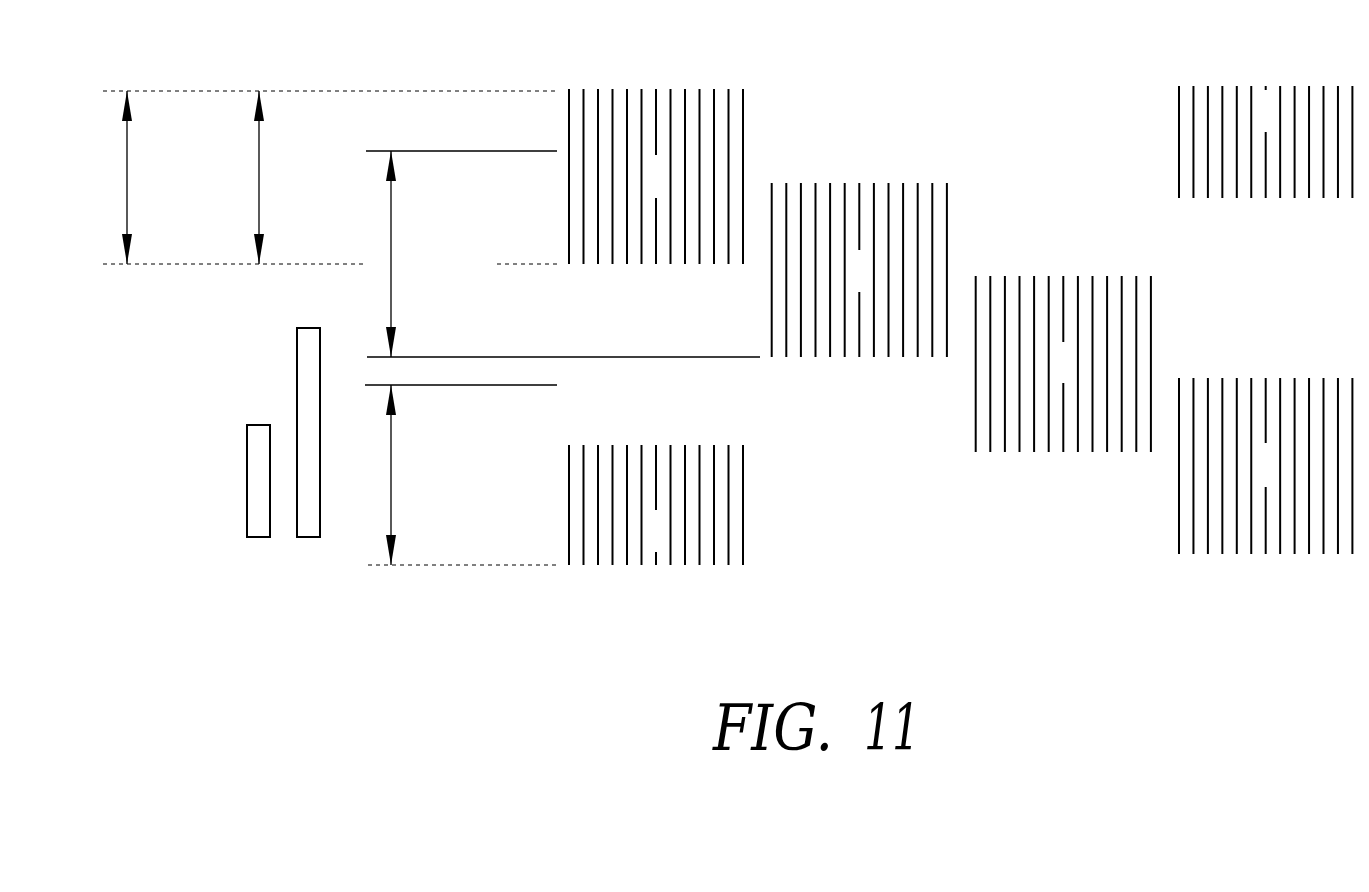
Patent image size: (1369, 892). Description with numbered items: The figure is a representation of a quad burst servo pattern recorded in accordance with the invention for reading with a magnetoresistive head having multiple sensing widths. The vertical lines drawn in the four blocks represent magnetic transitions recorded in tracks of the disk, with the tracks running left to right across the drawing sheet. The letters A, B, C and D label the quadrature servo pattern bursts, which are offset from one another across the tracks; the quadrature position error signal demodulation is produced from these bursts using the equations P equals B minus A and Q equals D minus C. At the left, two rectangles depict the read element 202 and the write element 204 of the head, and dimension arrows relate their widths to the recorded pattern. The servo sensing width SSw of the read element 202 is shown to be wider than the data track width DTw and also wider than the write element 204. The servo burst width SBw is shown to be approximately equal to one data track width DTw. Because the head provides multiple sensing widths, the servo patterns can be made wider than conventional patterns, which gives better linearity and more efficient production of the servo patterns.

The read element 202 is at (309, 537).
The write element 204 is at (258, 537).
The servo pattern burst A is at (656, 327).
The servo pattern burst B is at (1063, 364).
The servo pattern burst C is at (859, 270).
The servo pattern burst D is at (1265, 320).
The data track width DTw is at (295, 328).
The servo burst width SBw is at (296, 177).
The servo sensing width SSw is at (428, 254).